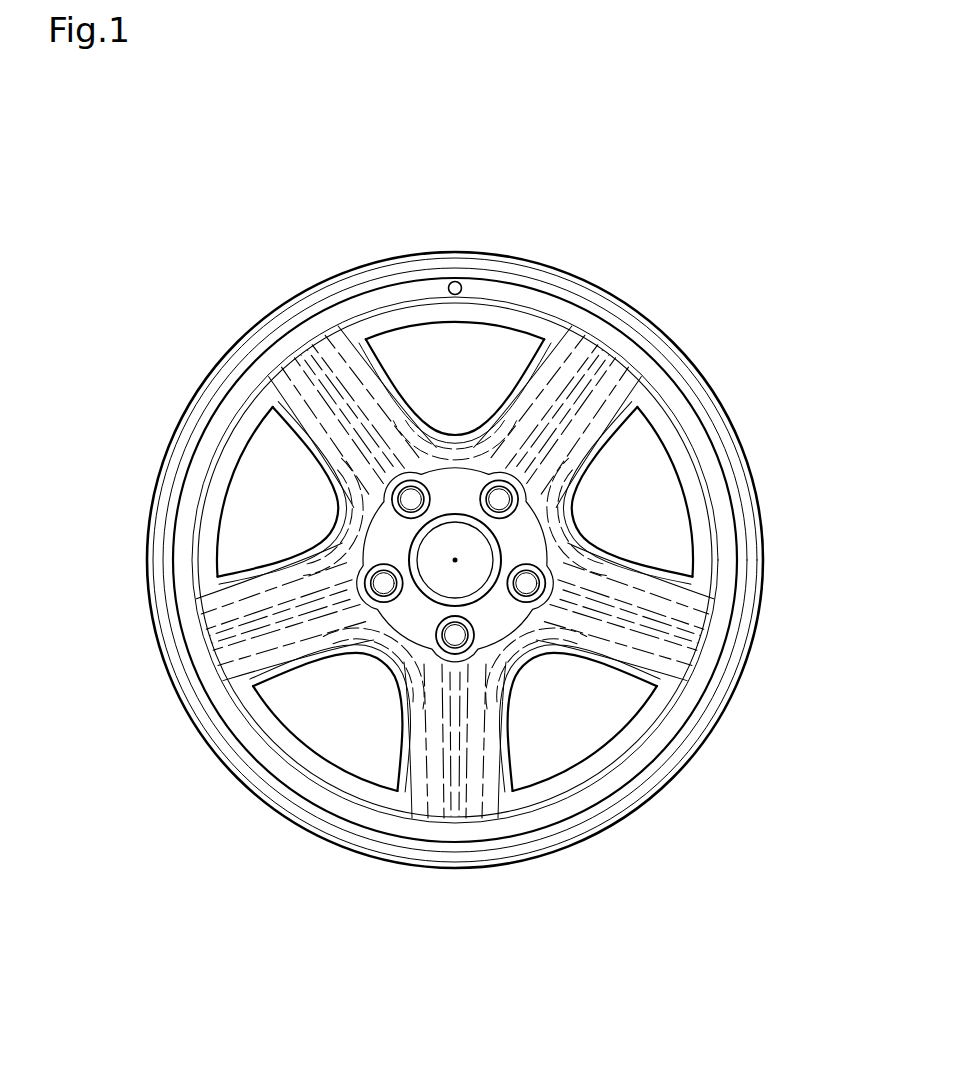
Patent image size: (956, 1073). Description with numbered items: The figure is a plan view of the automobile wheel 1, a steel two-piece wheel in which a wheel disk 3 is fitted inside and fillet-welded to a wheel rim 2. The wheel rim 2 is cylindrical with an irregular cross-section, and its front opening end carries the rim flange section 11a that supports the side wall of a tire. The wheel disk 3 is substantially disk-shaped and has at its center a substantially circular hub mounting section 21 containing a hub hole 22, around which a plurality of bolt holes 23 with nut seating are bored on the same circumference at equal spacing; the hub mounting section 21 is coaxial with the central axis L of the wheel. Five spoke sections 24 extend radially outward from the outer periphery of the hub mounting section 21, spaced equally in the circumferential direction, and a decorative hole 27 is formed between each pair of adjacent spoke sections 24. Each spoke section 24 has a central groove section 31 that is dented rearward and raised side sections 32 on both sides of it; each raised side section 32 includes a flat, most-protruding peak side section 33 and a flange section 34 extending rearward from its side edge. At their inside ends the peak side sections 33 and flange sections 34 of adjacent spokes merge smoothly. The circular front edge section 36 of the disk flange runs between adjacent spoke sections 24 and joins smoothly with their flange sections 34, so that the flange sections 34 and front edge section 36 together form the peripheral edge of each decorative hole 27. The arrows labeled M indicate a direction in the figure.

The automobile wheel 1 is at (690, 250).
The wheel rim 2 is at (740, 435).
The wheel disk 3 is at (390, 312).
The rim flange section 11a is at (753, 468).
The hub mounting section 21 is at (420, 623).
The hub hole 22 is at (480, 568).
The bolt hole 23 is at (461, 650).
The spoke section 24 is at (292, 362).
The decorative hole 27 is at (487, 340).
The central groove section 31 is at (300, 345).
The raised side section 32 is at (355, 318).
The peak side section 33 is at (330, 335).
The flange section 34 is at (512, 390).
The front edge section 36 is at (438, 252).
The central axis L is at (455, 560).
The direction M is at (365, 765).